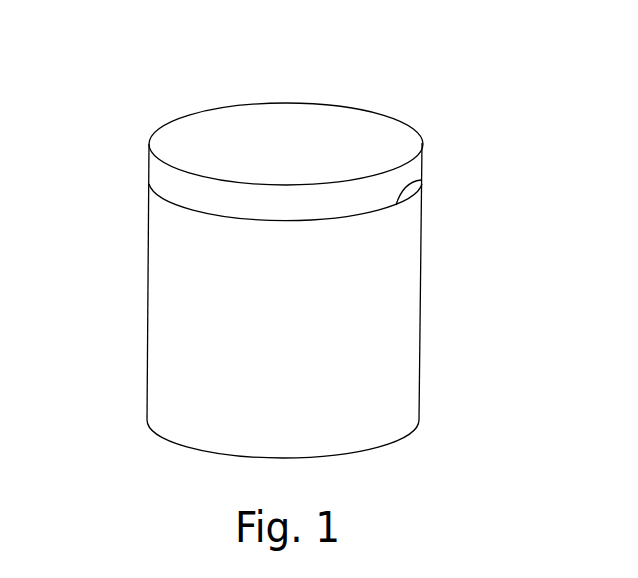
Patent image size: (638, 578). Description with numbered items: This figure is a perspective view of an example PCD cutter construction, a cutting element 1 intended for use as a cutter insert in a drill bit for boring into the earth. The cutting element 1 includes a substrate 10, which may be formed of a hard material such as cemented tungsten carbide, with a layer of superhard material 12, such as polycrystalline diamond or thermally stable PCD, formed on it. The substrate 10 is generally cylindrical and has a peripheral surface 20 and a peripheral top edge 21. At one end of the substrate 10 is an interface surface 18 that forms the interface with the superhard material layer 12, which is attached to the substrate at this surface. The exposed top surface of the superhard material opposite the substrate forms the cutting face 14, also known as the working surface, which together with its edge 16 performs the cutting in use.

The cutting element 1 is at (177, 77).
The substrate 10 is at (405, 321).
The layer of superhard material 12 is at (422, 168).
The cutting face 14 is at (298, 157).
The edge 16 is at (422, 143).
The interface surface 18 is at (421, 178).
The peripheral surface 20 is at (419, 384).
The peripheral top edge 21 is at (183, 209).